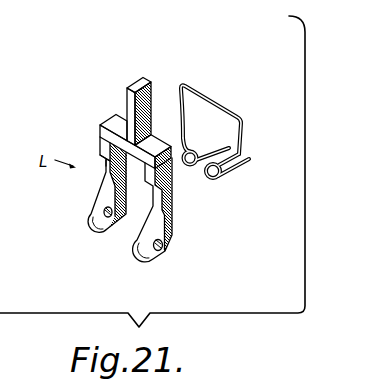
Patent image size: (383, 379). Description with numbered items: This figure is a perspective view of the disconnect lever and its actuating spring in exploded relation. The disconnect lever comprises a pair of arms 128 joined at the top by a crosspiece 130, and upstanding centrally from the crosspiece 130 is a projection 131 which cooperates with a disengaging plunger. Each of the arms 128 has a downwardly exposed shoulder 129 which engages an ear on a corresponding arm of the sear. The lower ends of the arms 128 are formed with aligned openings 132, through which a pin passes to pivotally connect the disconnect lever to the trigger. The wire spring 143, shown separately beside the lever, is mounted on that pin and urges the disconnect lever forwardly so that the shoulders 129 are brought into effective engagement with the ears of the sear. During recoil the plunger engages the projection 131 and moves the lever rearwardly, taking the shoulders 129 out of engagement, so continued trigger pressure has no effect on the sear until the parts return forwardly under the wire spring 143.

The arms 128 is at (106, 170).
The shoulders 129 is at (106, 160).
The crosspiece 130 is at (153, 143).
The projection 131 is at (126, 100).
The aligned openings 132 is at (111, 216).
The wire spring 143 is at (233, 114).